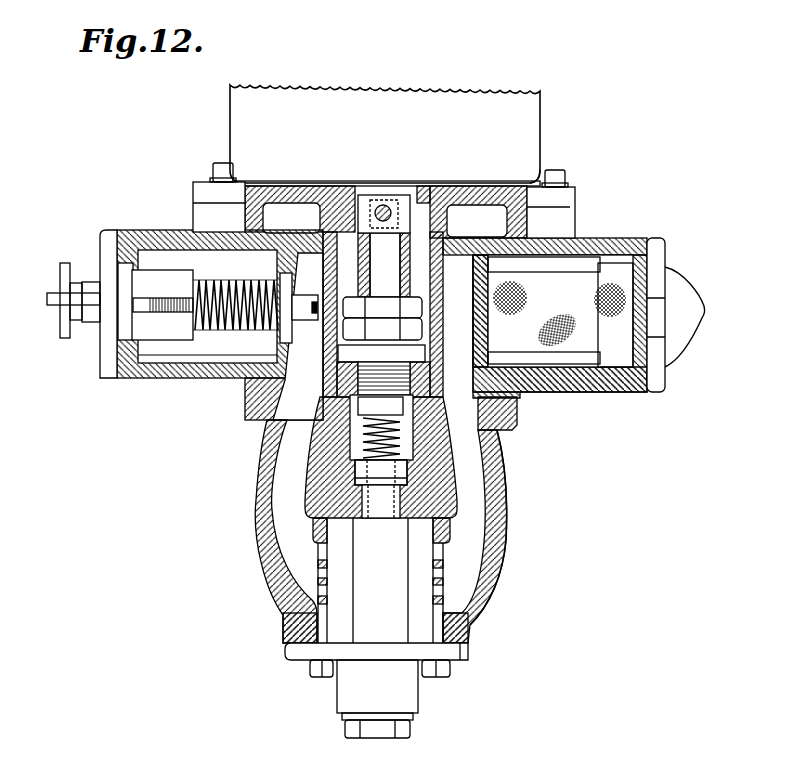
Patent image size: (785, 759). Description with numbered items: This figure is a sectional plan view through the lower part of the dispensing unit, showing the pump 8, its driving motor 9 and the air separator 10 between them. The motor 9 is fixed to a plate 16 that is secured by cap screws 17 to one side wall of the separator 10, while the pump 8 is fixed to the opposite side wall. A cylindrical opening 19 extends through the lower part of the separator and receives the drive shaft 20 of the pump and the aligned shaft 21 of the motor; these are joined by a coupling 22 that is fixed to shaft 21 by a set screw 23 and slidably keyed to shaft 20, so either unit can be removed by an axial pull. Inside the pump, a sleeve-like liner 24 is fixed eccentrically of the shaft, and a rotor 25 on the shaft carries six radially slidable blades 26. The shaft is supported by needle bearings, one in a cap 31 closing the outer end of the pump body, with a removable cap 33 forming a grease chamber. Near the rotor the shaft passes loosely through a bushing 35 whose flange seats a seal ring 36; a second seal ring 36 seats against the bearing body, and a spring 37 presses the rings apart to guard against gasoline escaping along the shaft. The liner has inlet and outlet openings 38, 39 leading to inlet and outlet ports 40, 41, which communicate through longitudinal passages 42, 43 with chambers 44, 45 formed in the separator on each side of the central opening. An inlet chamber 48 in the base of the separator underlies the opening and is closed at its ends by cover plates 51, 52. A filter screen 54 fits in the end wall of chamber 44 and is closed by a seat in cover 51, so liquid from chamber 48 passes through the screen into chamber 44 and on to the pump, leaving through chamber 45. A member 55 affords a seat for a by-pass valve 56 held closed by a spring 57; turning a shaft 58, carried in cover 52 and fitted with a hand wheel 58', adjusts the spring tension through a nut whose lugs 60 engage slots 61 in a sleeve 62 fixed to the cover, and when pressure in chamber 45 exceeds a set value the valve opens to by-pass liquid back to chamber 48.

The pump 8 is at (500, 552).
The driving motor 9 is at (385, 135).
The air separator 10 is at (520, 398).
The plate 16 is at (510, 184).
The cap screws 17 is at (222, 168).
The cylindrical opening 19 is at (447, 238).
The drive shaft 20 is at (358, 247).
The motor shaft 21 is at (372, 195).
The coupling 22 is at (420, 245).
The set screw 23 is at (386, 205).
The liner 24 is at (458, 526).
The rotor 25 is at (378, 632).
The blades 26 is at (408, 588).
The cap 31 is at (418, 697).
The removable cap 33 is at (358, 305).
The bushing 35 is at (373, 500).
The seal ring 36 is at (363, 410).
The spring 37 is at (360, 442).
The inlet openings 38 is at (445, 597).
The outlet openings 39 is at (320, 596).
The inlet port 40 is at (448, 618).
The outlet port 41 is at (310, 613).
The longitudinal passage 42 is at (478, 485).
The longitudinal passage 43 is at (283, 484).
The chamber 44 is at (497, 432).
The chamber 45 is at (302, 373).
The inlet chamber 48 is at (182, 353).
The cover plate 51 is at (658, 379).
The cover plate 52 is at (106, 369).
The filter screen 54 is at (560, 311).
The member 55 is at (290, 330).
The by-pass valve 56 is at (280, 285).
The spring 57 is at (213, 328).
The shaft 58 is at (52, 295).
The hand wheel 58' is at (35, 300).
The lugs 60 is at (147, 378).
The slots 61 is at (137, 292).
The sleeve 62 is at (162, 305).